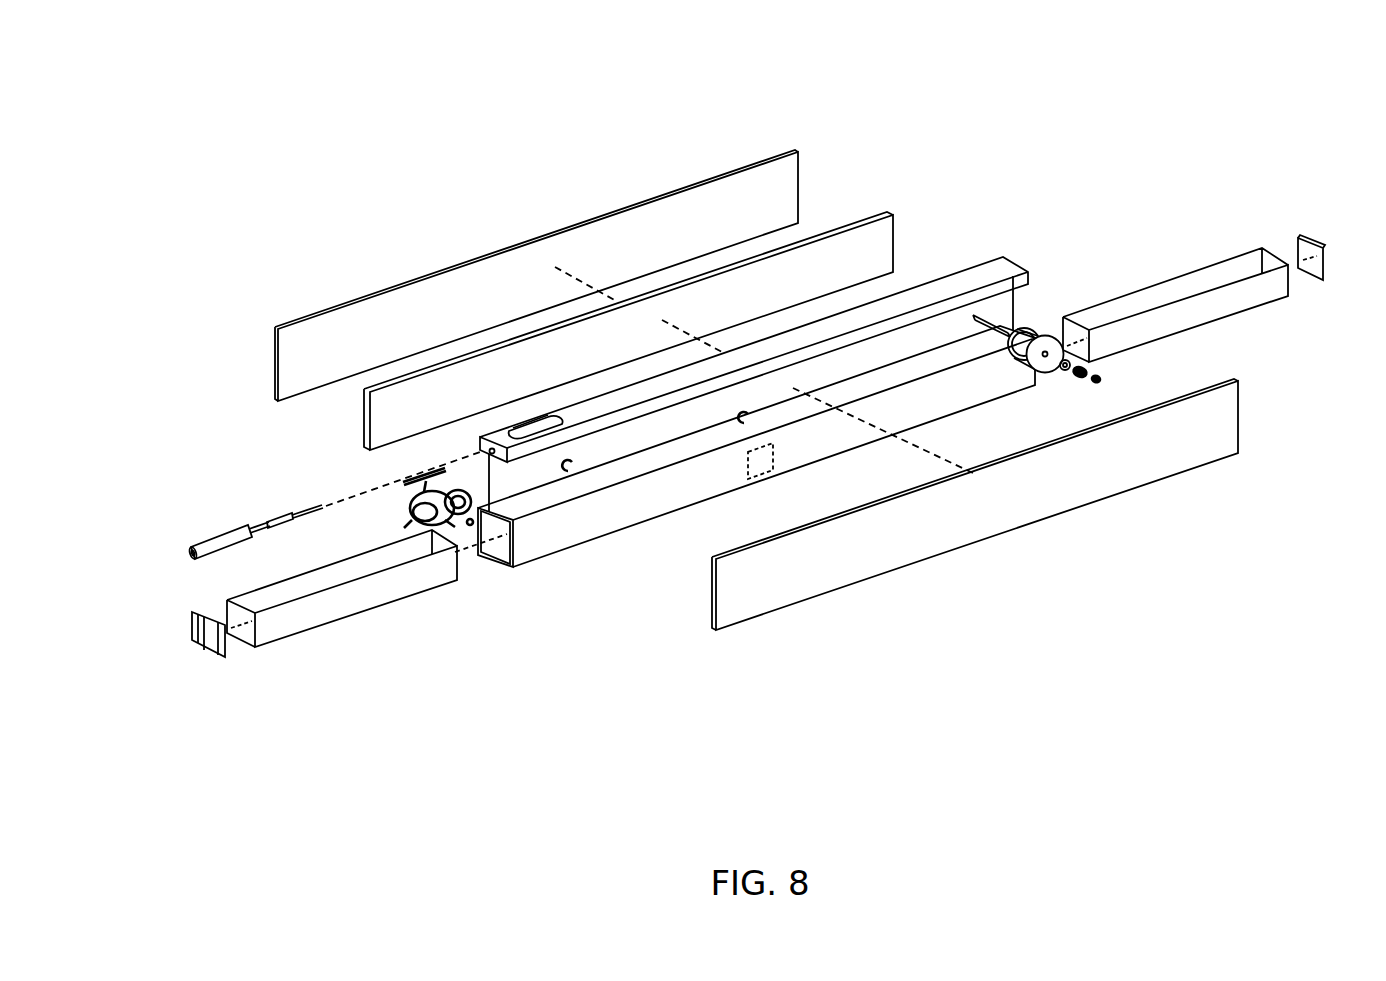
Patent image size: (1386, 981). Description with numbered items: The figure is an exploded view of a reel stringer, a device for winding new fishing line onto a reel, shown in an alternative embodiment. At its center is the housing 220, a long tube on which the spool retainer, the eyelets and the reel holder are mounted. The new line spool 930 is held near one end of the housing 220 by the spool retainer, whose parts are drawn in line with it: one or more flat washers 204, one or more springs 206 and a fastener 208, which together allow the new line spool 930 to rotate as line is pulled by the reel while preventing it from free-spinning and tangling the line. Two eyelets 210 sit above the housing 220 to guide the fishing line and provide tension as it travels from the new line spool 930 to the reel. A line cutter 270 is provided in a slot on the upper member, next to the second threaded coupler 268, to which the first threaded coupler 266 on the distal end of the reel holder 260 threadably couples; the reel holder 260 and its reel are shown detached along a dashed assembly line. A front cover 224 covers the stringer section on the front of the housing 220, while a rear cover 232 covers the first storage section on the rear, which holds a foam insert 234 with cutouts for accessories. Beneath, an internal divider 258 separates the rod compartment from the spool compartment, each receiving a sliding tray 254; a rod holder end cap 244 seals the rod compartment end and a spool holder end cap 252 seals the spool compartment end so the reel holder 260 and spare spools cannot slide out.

The flat washers 204 is at (1060, 367).
The springs 206 is at (1077, 380).
The fastener 208 is at (1093, 381).
The eyelets 210 is at (740, 421).
The housing 220 is at (1025, 277).
The front cover 224 is at (775, 590).
The rear cover 232 is at (752, 165).
The foam insert 234 is at (889, 208).
The rod holder end cap 244 is at (215, 657).
The spool holder end cap 252 is at (1300, 236).
The trays 254 is at (303, 602).
The internal divider 258 is at (757, 464).
The reel holder 260 is at (257, 528).
The first threaded coupler 266 is at (323, 508).
The second threaded coupler 268 is at (481, 438).
The line cutter 270 is at (523, 426).
The new line spool 930 is at (1040, 332).